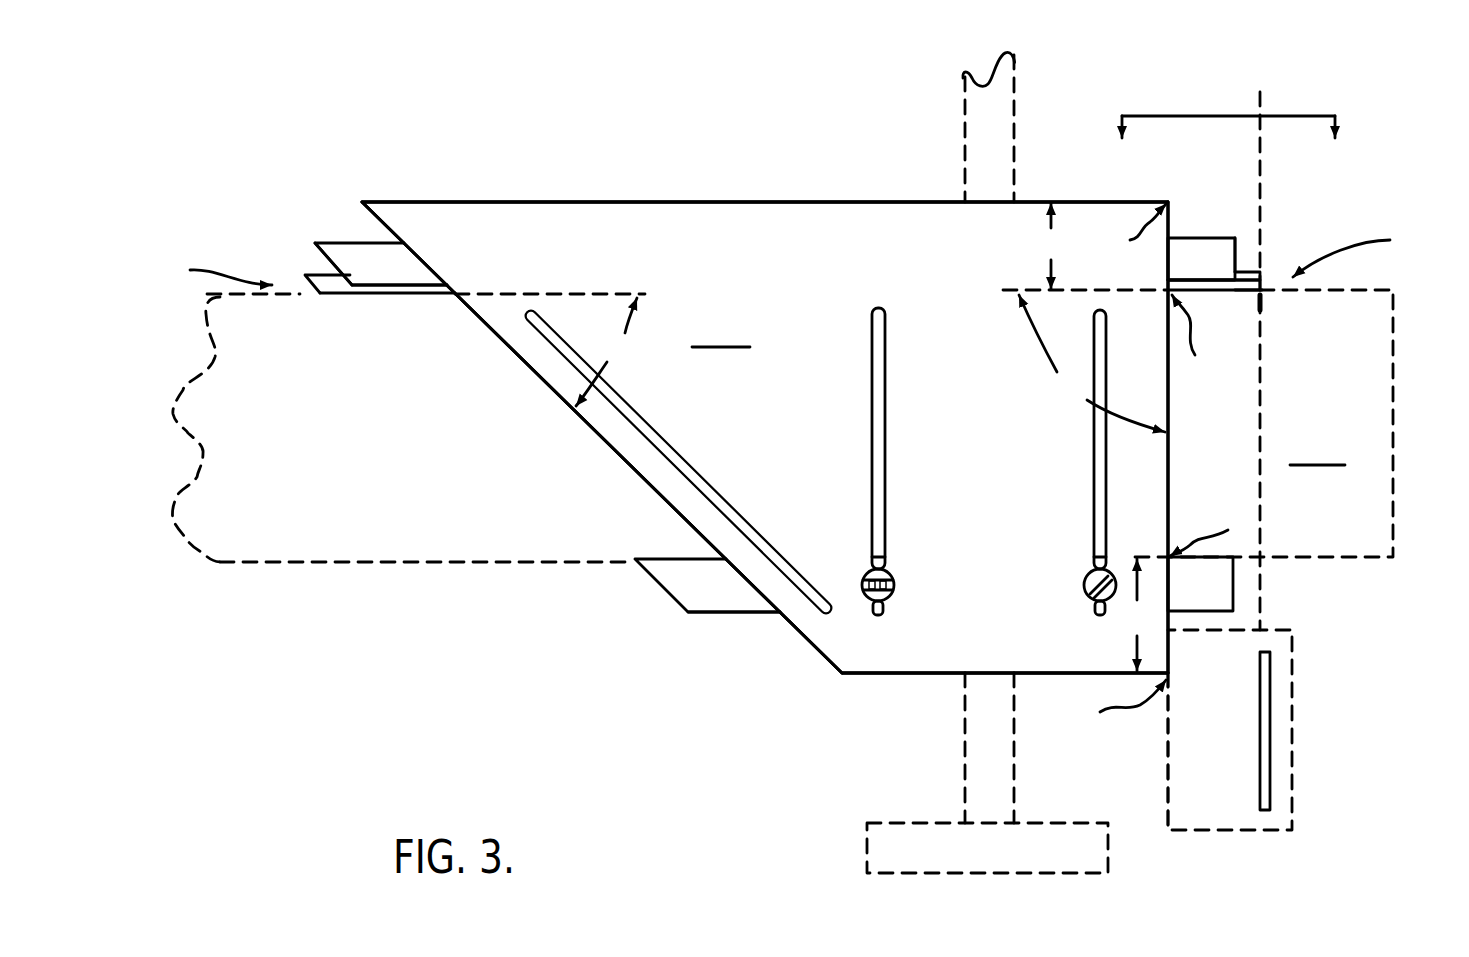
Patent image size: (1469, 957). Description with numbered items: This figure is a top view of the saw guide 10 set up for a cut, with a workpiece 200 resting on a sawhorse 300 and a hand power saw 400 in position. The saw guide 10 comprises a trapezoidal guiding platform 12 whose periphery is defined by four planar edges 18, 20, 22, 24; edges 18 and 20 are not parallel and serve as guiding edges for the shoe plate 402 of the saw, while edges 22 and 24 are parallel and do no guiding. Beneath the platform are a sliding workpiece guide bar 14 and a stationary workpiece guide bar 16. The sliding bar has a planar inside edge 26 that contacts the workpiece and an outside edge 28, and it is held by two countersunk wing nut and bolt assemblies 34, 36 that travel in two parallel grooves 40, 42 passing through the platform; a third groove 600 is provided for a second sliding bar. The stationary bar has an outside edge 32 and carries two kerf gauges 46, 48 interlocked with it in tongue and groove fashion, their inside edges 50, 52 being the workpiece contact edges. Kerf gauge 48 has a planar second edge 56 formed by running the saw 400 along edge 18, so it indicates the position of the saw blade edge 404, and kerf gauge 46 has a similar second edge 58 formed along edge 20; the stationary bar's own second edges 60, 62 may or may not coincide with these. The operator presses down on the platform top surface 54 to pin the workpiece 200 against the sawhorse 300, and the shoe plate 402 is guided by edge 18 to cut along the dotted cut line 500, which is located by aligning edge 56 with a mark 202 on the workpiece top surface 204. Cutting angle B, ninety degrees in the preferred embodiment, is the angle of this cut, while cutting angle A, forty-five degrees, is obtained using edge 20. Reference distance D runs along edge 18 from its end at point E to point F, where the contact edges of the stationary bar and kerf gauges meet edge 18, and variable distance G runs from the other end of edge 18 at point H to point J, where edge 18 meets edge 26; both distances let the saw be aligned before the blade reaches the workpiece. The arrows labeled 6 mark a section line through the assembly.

The saw guide 10 is at (517, 150).
The guiding platform 12 is at (642, 233).
The sliding workpiece guide bar 14 is at (1200, 584).
The stationary workpiece guide bar 16 is at (1214, 259).
The guiding edge 18 is at (1168, 487).
The guiding edge 20 is at (595, 430).
The planar edge 22 is at (703, 202).
The planar edge 24 is at (878, 673).
The inside edge 26 is at (675, 559).
The outside edge 28 is at (730, 612).
The outside edge 32 is at (333, 243).
The wing nut and bolt assembly 34 is at (852, 575).
The wing nut and bolt assembly 36 is at (1078, 583).
The groove 40 is at (885, 453).
The groove 42 is at (1095, 457).
The kerf gauge 46 is at (214, 272).
The kerf gauge 48 is at (1357, 251).
The inside edge 50 is at (375, 294).
The inside edge 52 is at (1218, 290).
The platform top surface 54 is at (721, 330).
The second edge 56 is at (1263, 290).
The second edge 58 is at (305, 291).
The second edge 60 is at (1237, 253).
The second edge 62 is at (313, 248).
The workpiece 200 is at (408, 428).
The mark 202 is at (1262, 302).
The workpiece top surface 204 is at (1263, 423).
The sawhorse 300 is at (987, 773).
The hand power saw 400 is at (1230, 730).
The shoe plate 402 is at (1167, 777).
The saw blade edge 404 is at (1260, 703).
The cut line 500 is at (1260, 82).
The third groove 600 is at (654, 433).
The section line 6- 6 is at (1228, 146).
The cutting angle A is at (606, 352).
The cutting angle B is at (1092, 363).
The reference distance D is at (1051, 246).
The point E is at (1137, 230).
The point F is at (1190, 337).
The variable distance G is at (1137, 615).
The point H is at (1122, 706).
The point J is at (1205, 531).